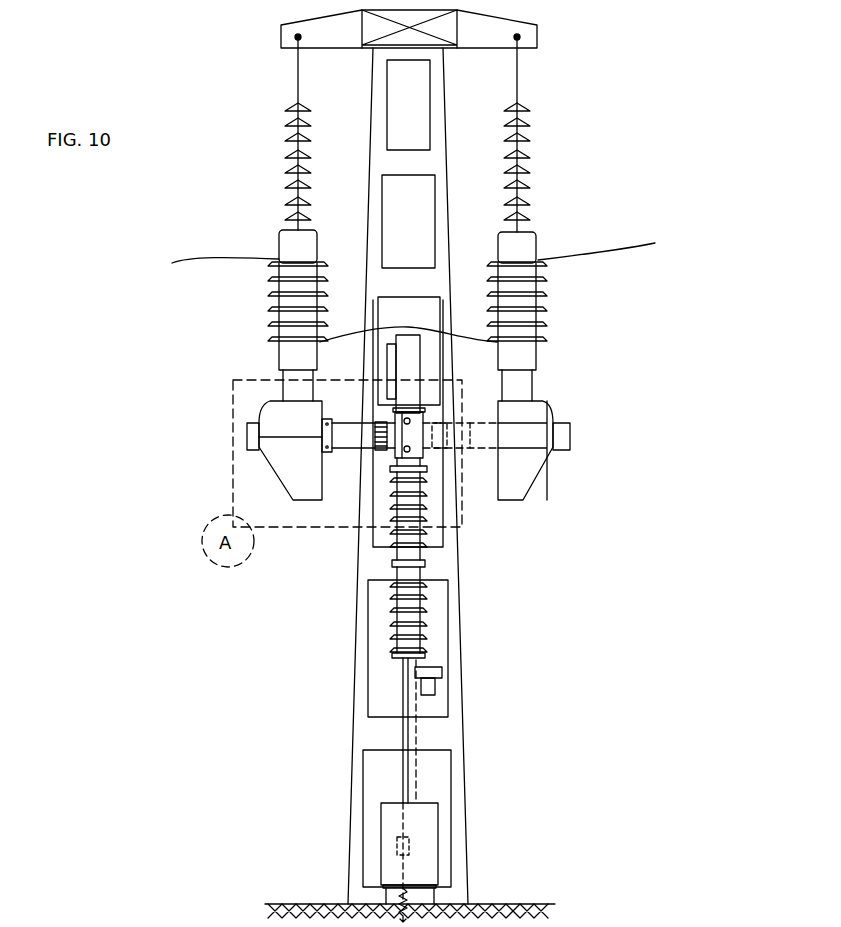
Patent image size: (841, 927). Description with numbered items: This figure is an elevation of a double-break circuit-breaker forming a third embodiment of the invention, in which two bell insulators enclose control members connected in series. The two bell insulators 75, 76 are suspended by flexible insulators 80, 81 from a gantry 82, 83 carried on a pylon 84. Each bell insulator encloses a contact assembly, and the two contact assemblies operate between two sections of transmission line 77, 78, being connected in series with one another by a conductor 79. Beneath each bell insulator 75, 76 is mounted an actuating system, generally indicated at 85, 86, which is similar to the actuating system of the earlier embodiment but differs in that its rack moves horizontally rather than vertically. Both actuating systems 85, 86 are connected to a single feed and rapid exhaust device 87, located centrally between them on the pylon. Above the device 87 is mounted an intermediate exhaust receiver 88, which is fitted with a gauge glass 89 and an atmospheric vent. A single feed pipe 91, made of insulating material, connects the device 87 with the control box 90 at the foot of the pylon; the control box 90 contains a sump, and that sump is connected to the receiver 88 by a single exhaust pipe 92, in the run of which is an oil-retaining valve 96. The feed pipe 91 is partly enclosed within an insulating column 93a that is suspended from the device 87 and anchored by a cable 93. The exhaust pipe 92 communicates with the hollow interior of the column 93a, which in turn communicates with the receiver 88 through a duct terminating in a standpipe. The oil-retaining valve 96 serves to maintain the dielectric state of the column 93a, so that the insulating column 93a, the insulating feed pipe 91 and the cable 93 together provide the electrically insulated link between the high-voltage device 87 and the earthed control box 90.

The bell insulator 75 is at (285, 281).
The bell insulator 76 is at (530, 287).
The section of transmission line 77 is at (218, 256).
The section of transmission line 78 is at (633, 250).
The conductor 79 is at (363, 330).
The flexible insulator 80 is at (300, 143).
The flexible insulator 81 is at (520, 188).
The gantry 82 is at (283, 32).
The gantry 83 is at (490, 25).
The pylon 84 is at (437, 165).
The actuating system 85 is at (348, 455).
The actuating system 86 is at (512, 495).
The feed and rapid exhaust device 87 is at (403, 417).
The intermediate exhaust receiver 88 is at (412, 345).
The gauge glass 89 is at (388, 355).
The control box 90 is at (388, 817).
The feed pipe 91 is at (407, 688).
The exhaust pipe 92 is at (417, 741).
The cable 93 is at (404, 737).
The insulating column 93a is at (413, 575).
The oil-retaining valve 96 is at (443, 671).